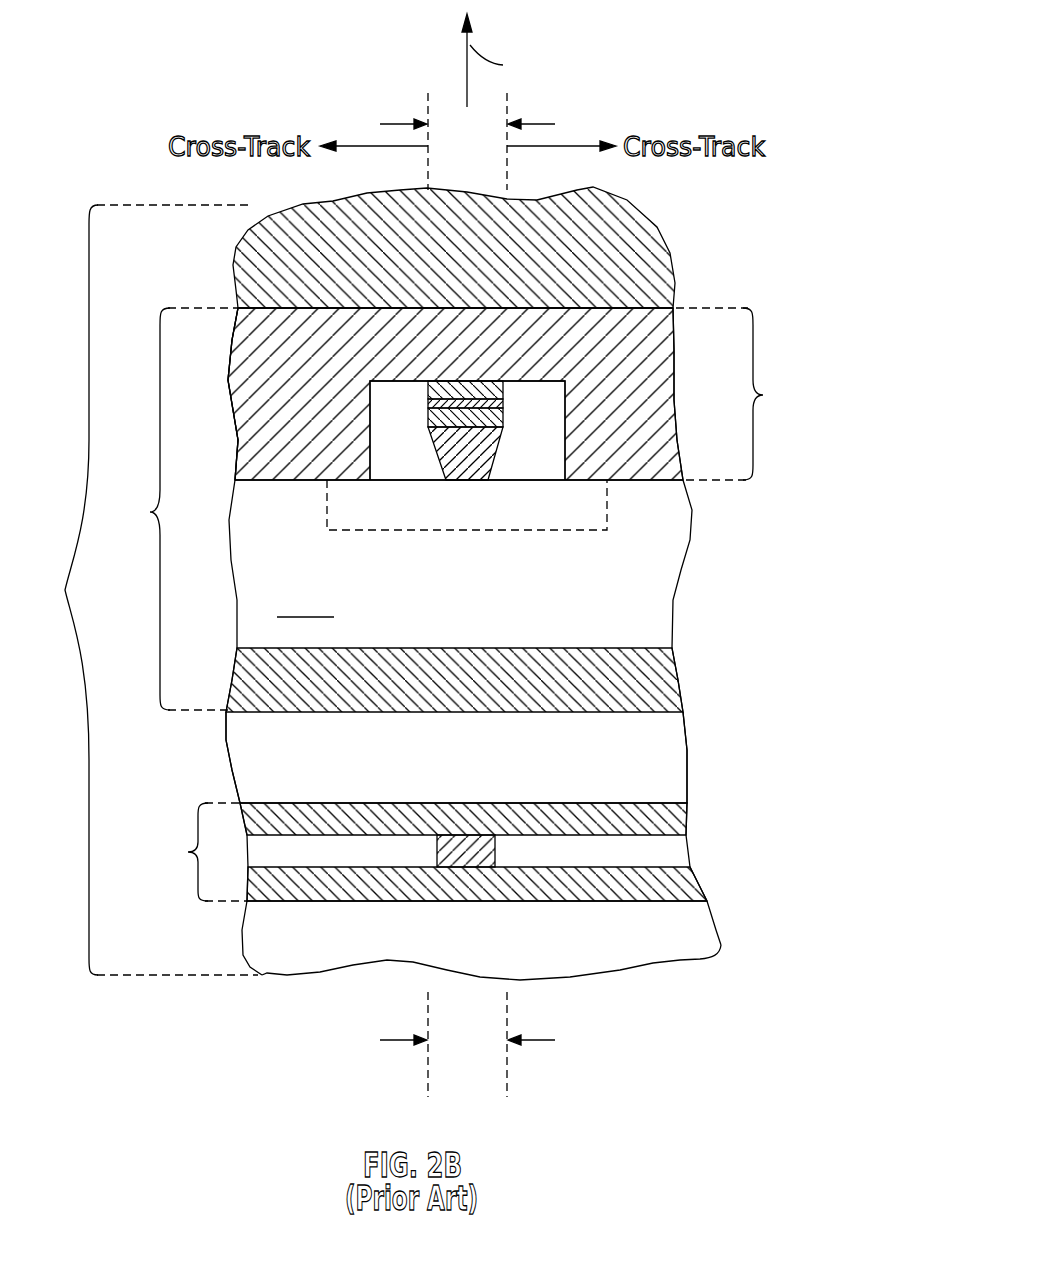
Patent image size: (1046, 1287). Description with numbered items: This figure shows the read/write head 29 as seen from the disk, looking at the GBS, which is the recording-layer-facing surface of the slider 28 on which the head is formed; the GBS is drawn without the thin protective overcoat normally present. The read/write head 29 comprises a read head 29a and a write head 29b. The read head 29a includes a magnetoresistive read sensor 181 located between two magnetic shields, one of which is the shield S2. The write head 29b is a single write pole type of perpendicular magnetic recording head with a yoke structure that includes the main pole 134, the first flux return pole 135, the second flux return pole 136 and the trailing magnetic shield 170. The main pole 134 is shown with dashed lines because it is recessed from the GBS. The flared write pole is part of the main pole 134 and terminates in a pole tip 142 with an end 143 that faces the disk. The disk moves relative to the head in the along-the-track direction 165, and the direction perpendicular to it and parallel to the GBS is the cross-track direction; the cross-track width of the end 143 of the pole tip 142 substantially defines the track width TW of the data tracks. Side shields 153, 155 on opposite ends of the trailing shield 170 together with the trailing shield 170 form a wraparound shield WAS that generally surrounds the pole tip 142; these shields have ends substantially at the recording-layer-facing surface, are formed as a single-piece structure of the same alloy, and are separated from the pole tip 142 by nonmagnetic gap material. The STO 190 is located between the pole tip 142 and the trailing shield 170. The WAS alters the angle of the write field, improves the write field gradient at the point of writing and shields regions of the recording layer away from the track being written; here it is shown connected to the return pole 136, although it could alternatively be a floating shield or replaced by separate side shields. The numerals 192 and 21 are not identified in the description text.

The second flux return pole 136 is at (657, 230).
The trailing magnetic shield 170 is at (543, 317).
The side shield 153 is at (660, 366).
The side shield 155 is at (240, 368).
The STO 190 is at (466, 426).
The sensing layer 192 is at (505, 404).
The pole tip 142 is at (497, 440).
The end of pole tip 143 is at (465, 470).
The main pole 134 is at (572, 533).
The first flux return pole 135 is at (665, 661).
The slider 28 is at (690, 736).
The magnetic shield S2 is at (680, 812).
The magnetoresistive read element or sensor 181 is at (495, 845).
The substrate 21 is at (665, 905).
The read/write head 29 is at (145, 590).
The read head 29a is at (194, 852).
The write head 29b is at (171, 509).
The along-the-track direction 165 is at (469, 35).
The track-width TW is at (467, 595).
The wraparound shield WAS is at (750, 394).
The gas bearing surface GBS is at (305, 602).